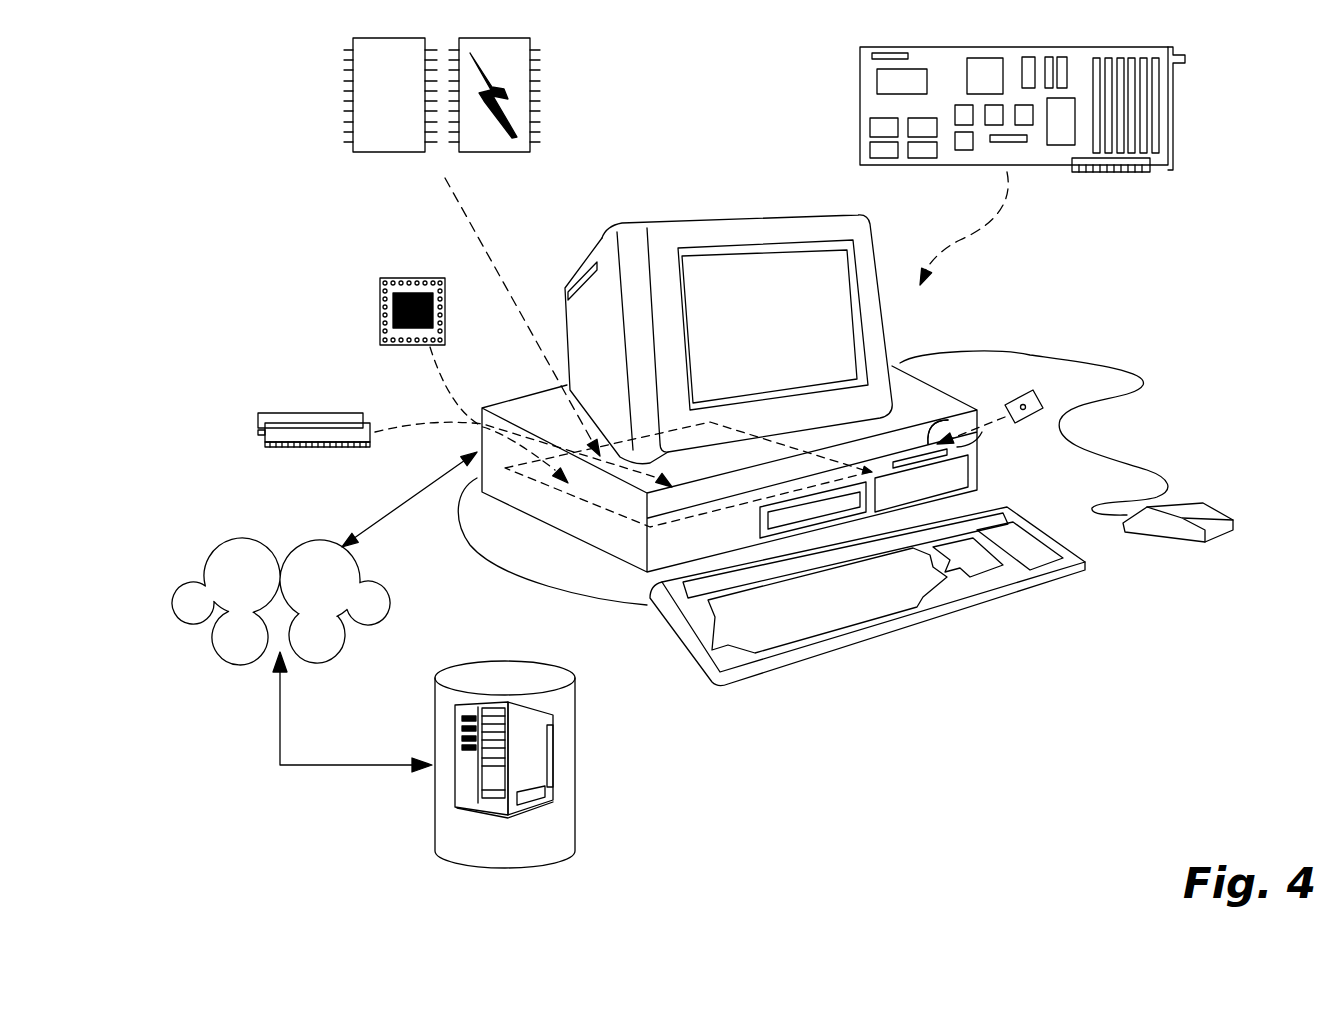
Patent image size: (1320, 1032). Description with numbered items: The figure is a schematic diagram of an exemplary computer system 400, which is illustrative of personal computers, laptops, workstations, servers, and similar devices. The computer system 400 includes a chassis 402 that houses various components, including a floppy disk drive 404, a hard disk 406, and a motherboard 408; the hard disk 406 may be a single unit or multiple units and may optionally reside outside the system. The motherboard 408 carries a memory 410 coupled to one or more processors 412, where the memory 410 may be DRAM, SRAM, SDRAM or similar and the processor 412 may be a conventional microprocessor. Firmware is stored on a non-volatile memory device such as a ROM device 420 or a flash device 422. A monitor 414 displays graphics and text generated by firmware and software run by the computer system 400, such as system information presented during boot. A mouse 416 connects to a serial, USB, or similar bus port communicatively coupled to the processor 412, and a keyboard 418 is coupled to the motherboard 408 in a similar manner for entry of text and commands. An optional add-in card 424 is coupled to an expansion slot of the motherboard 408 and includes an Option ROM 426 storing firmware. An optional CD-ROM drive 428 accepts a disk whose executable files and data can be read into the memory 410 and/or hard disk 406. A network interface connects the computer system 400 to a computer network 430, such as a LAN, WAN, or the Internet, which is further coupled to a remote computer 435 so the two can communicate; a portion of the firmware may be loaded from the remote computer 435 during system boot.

The computer system 400 is at (997, 830).
The chassis 402 is at (990, 426).
The floppy disk drive 404 is at (980, 432).
The hard disk 406 is at (945, 477).
The motherboard 408 is at (587, 502).
The memory 410 is at (285, 420).
The processor 412 is at (445, 330).
The monitor 414 is at (880, 282).
The mouse 416 is at (1213, 543).
The keyboard 418 is at (968, 610).
The ROM device 420 is at (390, 142).
The flash device 422 is at (500, 143).
The add-in card 424 is at (1167, 100).
The Option ROM 426 is at (887, 83).
The CD-ROM drive 428 is at (760, 522).
The computer network 430 is at (320, 648).
The remote computer 435 is at (577, 727).